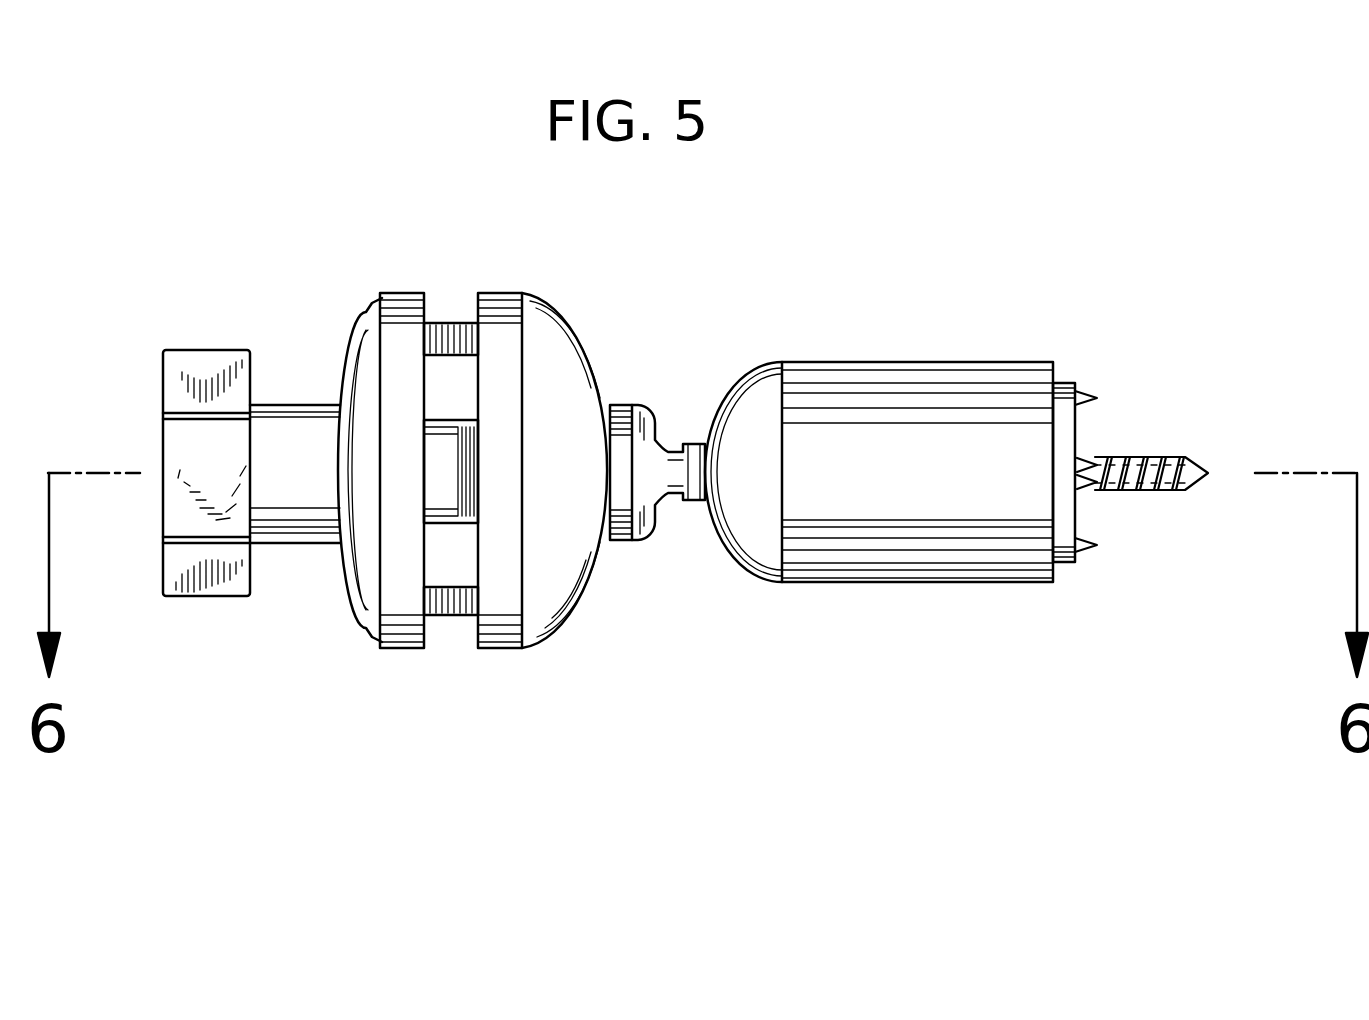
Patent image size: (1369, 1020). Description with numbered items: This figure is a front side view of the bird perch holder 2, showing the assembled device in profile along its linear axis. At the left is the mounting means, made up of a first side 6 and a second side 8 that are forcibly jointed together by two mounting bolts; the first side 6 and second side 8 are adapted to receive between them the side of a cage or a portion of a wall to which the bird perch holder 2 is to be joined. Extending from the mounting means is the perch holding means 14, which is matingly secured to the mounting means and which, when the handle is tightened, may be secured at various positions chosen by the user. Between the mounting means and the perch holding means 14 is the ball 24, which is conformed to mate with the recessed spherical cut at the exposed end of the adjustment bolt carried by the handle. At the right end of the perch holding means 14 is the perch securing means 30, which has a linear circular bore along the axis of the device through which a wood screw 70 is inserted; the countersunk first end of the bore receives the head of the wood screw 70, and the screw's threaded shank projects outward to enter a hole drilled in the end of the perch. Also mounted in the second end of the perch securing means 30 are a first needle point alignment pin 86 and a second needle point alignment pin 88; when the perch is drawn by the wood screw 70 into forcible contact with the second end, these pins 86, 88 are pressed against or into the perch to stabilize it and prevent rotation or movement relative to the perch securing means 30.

The bird perch holder 2 is at (688, 348).
The first side 6 is at (400, 293).
The second side 8 is at (535, 300).
The perch holding means 14 is at (852, 362).
The ball 24 is at (660, 508).
The perch securing means 30 is at (1065, 383).
The wood screw 70 is at (1160, 462).
The first needle point alignment pin 86 is at (1084, 395).
The second needle point alignment pin 88 is at (1092, 547).